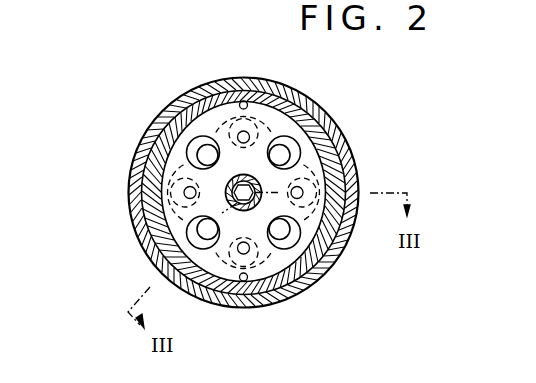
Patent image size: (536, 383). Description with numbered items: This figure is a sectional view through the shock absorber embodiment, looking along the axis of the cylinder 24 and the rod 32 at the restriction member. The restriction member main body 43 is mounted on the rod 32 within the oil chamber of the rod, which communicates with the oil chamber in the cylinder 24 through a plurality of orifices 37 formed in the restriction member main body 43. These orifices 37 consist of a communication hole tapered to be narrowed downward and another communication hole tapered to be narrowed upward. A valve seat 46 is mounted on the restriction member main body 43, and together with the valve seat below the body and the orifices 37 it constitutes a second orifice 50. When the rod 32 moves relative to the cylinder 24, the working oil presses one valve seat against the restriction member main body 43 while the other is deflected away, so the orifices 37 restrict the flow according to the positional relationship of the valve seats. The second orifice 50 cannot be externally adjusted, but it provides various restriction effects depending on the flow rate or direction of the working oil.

The cylinder 24 is at (140, 168).
The rod 32 is at (155, 222).
The orifices 37 is at (208, 98).
The restriction member main body 43 is at (312, 232).
The valve seat 46 is at (304, 168).
The second orifice 50 is at (305, 161).